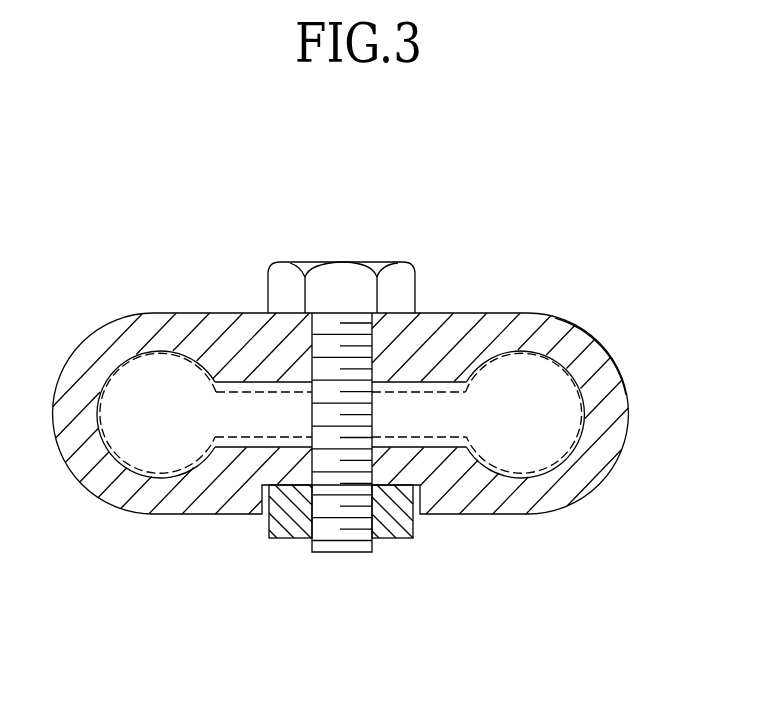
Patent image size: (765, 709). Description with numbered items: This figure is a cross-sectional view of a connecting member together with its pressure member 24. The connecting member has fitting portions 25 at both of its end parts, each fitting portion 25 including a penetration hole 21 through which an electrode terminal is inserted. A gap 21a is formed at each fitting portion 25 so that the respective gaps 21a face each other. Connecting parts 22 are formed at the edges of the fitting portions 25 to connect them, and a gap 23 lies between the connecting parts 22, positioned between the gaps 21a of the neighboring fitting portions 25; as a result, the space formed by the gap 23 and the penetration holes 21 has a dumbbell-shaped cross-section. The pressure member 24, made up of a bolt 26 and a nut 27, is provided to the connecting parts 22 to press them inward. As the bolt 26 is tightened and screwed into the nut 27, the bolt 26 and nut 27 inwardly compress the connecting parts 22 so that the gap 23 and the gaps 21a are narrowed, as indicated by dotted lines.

The penetration hole 21 is at (548, 392).
The gap 21a is at (467, 405).
The connecting part 22 is at (455, 332).
The gap 23 is at (245, 413).
The pressure member 24 is at (345, 471).
The fitting portion 25 is at (583, 352).
The bolt 26 is at (350, 553).
The nut 27 is at (392, 538).